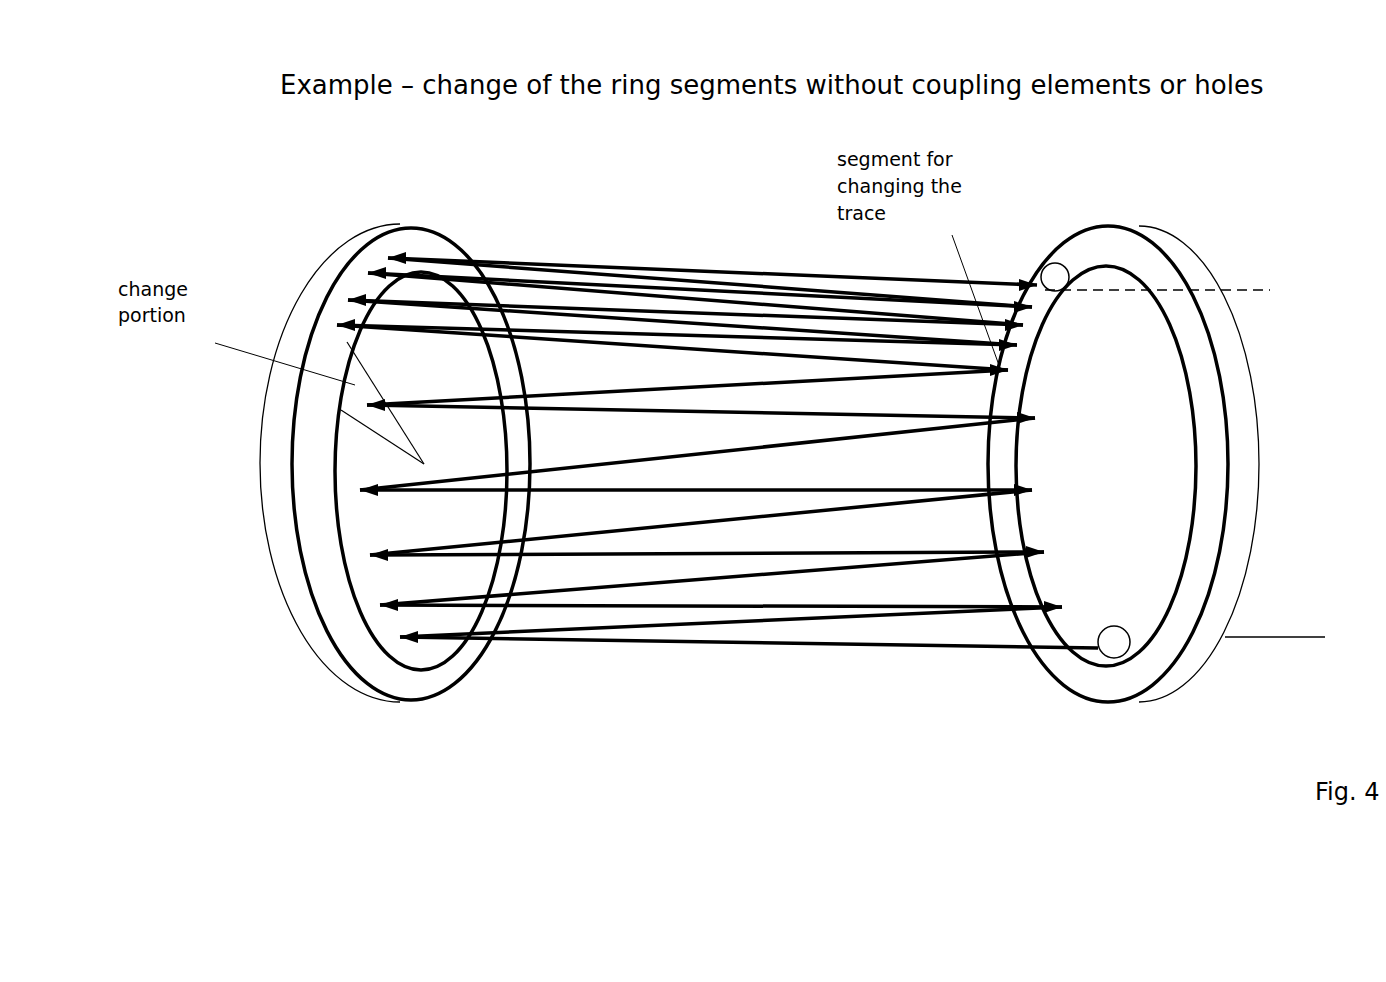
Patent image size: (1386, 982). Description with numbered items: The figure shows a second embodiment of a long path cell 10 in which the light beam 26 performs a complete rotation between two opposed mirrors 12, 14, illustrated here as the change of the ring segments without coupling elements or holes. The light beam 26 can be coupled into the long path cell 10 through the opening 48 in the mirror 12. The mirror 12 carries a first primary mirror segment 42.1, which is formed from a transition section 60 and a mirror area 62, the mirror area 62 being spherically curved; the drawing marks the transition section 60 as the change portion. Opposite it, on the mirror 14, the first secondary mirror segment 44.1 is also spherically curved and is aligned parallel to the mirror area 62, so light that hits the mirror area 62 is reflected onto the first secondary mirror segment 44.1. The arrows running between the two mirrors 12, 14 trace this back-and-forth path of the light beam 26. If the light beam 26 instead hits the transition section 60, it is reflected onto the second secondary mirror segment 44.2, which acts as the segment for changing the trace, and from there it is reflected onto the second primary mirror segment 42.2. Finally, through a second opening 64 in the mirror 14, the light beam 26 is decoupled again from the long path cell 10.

The long path cell 10 is at (1205, 166).
The mirror 12 is at (347, 247).
The mirror 14 is at (1167, 243).
The light beam 26 is at (1250, 290).
The first primary mirror segment 42.1 is at (362, 532).
The second primary mirror segment 42.2 is at (308, 514).
The first secondary mirror segment 44.1 is at (1160, 492).
The second secondary mirror segment 44.2 is at (1210, 405).
The opening 48 is at (1102, 658).
The transition section 60 is at (341, 410).
The mirror area 62 is at (375, 585).
The second opening 64 is at (1053, 262).